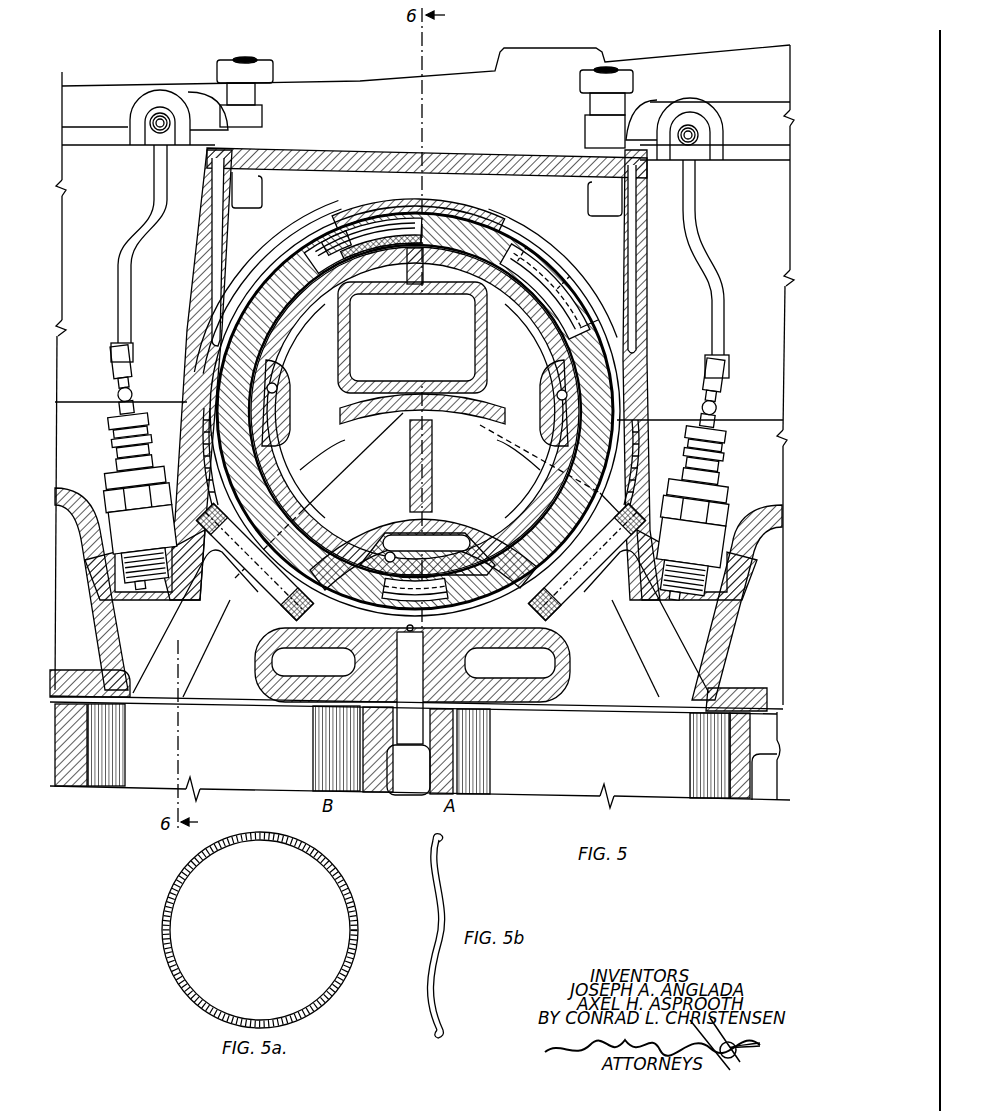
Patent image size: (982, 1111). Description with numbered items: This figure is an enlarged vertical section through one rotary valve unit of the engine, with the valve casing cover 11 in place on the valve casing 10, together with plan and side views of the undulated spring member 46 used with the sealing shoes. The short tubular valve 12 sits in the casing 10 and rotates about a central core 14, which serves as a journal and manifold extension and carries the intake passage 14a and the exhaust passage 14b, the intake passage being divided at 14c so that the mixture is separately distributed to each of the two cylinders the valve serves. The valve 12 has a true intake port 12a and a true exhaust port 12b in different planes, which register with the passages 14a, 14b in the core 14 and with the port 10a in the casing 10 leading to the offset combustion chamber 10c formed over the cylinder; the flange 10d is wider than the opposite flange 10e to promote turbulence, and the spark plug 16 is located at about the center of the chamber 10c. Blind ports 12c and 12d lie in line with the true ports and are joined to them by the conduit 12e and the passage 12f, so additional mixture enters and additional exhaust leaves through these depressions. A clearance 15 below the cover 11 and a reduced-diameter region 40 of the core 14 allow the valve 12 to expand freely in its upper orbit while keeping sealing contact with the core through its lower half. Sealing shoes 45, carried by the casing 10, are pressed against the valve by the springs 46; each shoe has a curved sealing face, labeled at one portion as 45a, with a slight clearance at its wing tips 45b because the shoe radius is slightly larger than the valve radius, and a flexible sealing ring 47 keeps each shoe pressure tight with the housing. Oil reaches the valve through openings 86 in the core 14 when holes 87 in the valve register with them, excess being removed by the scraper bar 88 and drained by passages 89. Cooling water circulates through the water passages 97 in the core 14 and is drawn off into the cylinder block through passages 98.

In FIG. 5, the valve casing 10 is at (640, 442).
In FIG. 5, the port in the valve casing 10a is at (216, 594).
In FIG. 5, the combustion chamber 10c is at (118, 668).
In FIG. 5, the flange 10d is at (300, 716).
In FIG. 5, the flange 10e is at (126, 706).
In FIG. 5, the valve casing cover 11 is at (640, 326).
In FIG. 5, the tubular valve 12 is at (508, 548).
In FIG. 5, the intake port 12a is at (552, 276).
In FIG. 5, the exhaust port 12b is at (370, 224).
In FIG. 5, the blind intake port 12c is at (540, 258).
In FIG. 5, the blind exhaust port 12d is at (350, 230).
In FIG. 5, the conduit 12e is at (574, 292).
In FIG. 5, the passage 12f is at (345, 232).
In FIG. 5, the core 14 is at (282, 306).
In FIG. 5, the intake passage 14a is at (335, 440).
In FIG. 5, the exhaust passage 14b is at (356, 354).
In FIG. 5, the division of the intake passage 14c is at (420, 440).
In FIG. 5, the clearance 15 is at (438, 205).
In FIG. 5, the spark plug 16 is at (108, 540).
In FIG. 5, the clearance space 40 is at (512, 240).
In FIG. 5, the sealing shoe 45 is at (205, 456).
In FIG. 5, the nozzle tube end 45a is at (630, 472).
In FIG. 5, the clearance at the tips of the sealing shoe 45b is at (632, 414).
In FIG. 5, the undulated spring member 46 is at (268, 626).
In FIG. 5A, the undulated spring member 46 is at (358, 928).
In FIG. 5B, the undulated spring member 46 is at (441, 900).
In FIG. 5, the sealing ring 47 is at (596, 584).
In FIG. 5, the oil opening 86 is at (386, 535).
In FIG. 5, the hole in the valve 87 is at (333, 662).
In FIG. 5, the scraper bar 88 is at (214, 400).
In FIG. 5, the drain passage 89 is at (410, 634).
In FIG. 5, the water passage 97 is at (630, 250).
In FIG. 5, the water passage to the cylinder block 98 is at (786, 708).